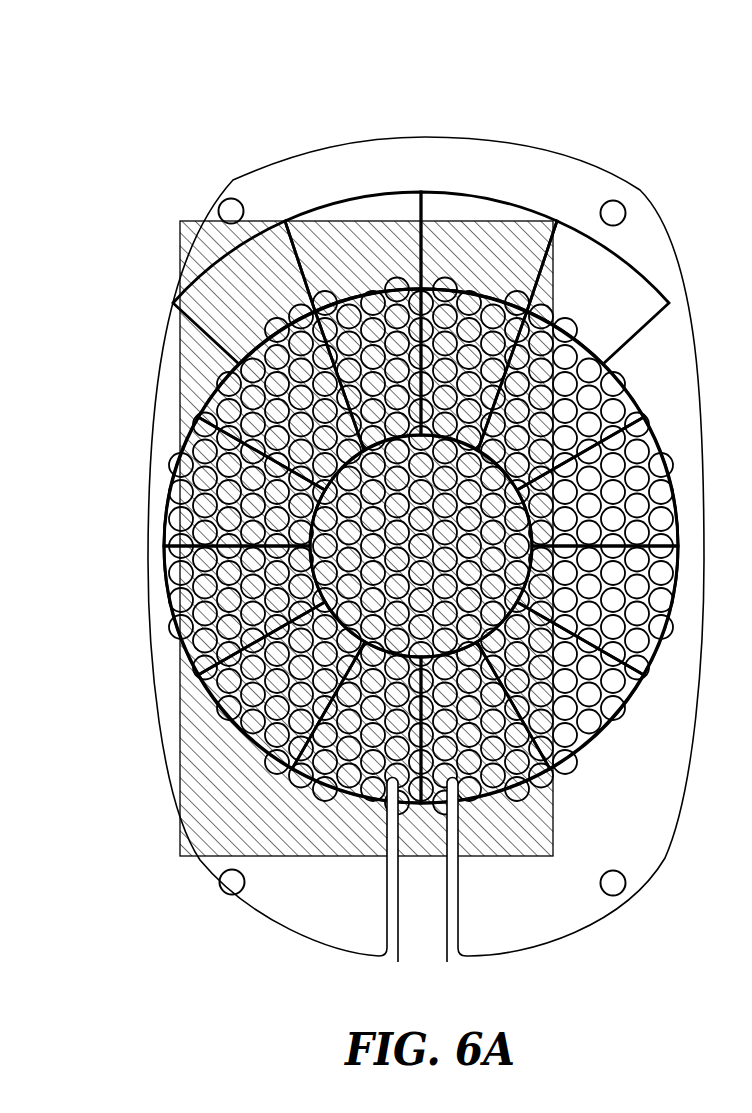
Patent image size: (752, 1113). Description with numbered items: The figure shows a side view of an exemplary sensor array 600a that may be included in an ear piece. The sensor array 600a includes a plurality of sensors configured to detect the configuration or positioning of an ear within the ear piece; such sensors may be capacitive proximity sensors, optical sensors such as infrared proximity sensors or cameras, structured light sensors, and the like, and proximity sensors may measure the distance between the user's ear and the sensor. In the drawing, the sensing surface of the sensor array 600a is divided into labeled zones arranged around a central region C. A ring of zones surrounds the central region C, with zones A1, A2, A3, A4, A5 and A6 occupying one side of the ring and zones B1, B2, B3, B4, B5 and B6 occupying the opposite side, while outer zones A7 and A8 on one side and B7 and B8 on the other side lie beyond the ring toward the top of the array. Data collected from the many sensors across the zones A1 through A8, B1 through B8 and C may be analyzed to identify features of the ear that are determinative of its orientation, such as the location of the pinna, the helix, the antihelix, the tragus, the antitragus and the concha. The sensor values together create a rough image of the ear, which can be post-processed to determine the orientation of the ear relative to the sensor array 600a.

The sensor array 600a is at (129, 76).
The electrode zone A1 is at (368, 369).
The electrode zone A2 is at (281, 400).
The electrode zone A3 is at (244, 481).
The electrode zone A4 is at (244, 610).
The electrode zone A5 is at (281, 685).
The electrode zone A6 is at (356, 722).
The electrode zone A7 is at (353, 251).
The electrode zone A8 is at (244, 292).
The electrode zone B1 is at (474, 369).
The electrode zone B2 is at (561, 400).
The electrode zone B3 is at (597, 481).
The electrode zone B4 is at (597, 610).
The electrode zone B5 is at (560, 685).
The electrode zone B6 is at (485, 722).
The electrode zone B7 is at (489, 251).
The electrode zone B8 is at (598, 292).
The central electrode zone C is at (421, 546).